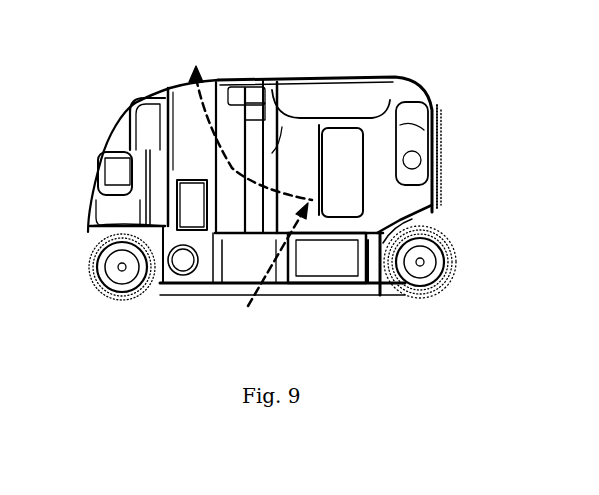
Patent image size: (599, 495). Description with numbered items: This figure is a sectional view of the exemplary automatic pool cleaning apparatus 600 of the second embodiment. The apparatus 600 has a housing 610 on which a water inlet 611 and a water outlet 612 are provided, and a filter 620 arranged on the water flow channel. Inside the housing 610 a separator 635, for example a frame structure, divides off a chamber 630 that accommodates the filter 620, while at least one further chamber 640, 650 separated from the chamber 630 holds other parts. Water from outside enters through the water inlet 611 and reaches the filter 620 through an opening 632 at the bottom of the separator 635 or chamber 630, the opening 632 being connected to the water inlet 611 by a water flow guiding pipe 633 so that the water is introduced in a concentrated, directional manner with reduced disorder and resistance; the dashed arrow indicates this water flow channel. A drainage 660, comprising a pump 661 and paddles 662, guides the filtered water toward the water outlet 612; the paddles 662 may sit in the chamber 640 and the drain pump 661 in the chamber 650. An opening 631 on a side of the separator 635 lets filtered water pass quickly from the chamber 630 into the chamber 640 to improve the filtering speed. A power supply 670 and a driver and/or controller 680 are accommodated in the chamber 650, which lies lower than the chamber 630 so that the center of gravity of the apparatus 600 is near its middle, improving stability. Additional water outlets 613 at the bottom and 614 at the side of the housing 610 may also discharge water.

The automatic pool cleaning apparatus 600 is at (131, 40).
The housing 610 is at (274, 78).
The water inlet 611 is at (262, 290).
The water outlet 612 is at (180, 88).
The water outlet 613 is at (363, 283).
The water outlet 614 is at (411, 222).
The filter 620 is at (345, 145).
The chamber 630 is at (357, 163).
The opening 631 is at (237, 178).
The opening 632 is at (272, 222).
The water flow guiding pipe 633 is at (277, 265).
The separator 635 is at (440, 138).
The chamber 640 is at (150, 152).
The chamber 650 is at (145, 223).
The drainage 660 is at (193, 143).
The pump 661 is at (185, 202).
The paddles 662 is at (150, 140).
The power supply 670 is at (331, 258).
The driver and/or controller 680 is at (183, 262).